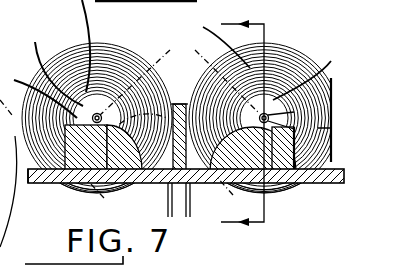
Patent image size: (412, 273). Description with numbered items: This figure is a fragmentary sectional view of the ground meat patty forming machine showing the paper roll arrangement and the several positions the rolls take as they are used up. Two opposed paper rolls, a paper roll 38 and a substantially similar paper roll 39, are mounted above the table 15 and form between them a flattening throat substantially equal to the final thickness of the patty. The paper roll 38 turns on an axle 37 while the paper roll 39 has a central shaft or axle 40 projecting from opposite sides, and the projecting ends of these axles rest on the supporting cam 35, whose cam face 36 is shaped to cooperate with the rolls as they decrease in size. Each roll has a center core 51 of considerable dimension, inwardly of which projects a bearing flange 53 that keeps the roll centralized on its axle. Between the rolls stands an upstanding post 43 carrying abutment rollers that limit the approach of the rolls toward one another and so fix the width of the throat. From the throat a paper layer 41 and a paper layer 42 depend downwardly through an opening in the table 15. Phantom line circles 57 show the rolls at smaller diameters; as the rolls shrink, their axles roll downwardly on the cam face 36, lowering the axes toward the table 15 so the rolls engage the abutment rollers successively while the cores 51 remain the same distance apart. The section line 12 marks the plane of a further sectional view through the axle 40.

The section line 12— 12 is at (256, 126).
The table 15 is at (27, 186).
The supporting cam 35 is at (67, 187).
The cam face 36 is at (339, 116).
The axle of paper roll 37 is at (97, 113).
The paper roll 38 is at (75, 63).
The paper roll 39 is at (298, 57).
The central shaft or axle 40 is at (331, 92).
The paper layer 41 is at (168, 205).
The paper layer 42 is at (190, 205).
The post 43 is at (182, 104).
The center core 51 is at (219, 38).
The bearing flange 53 is at (189, 65).
The phantom line circles 57 is at (173, 124).